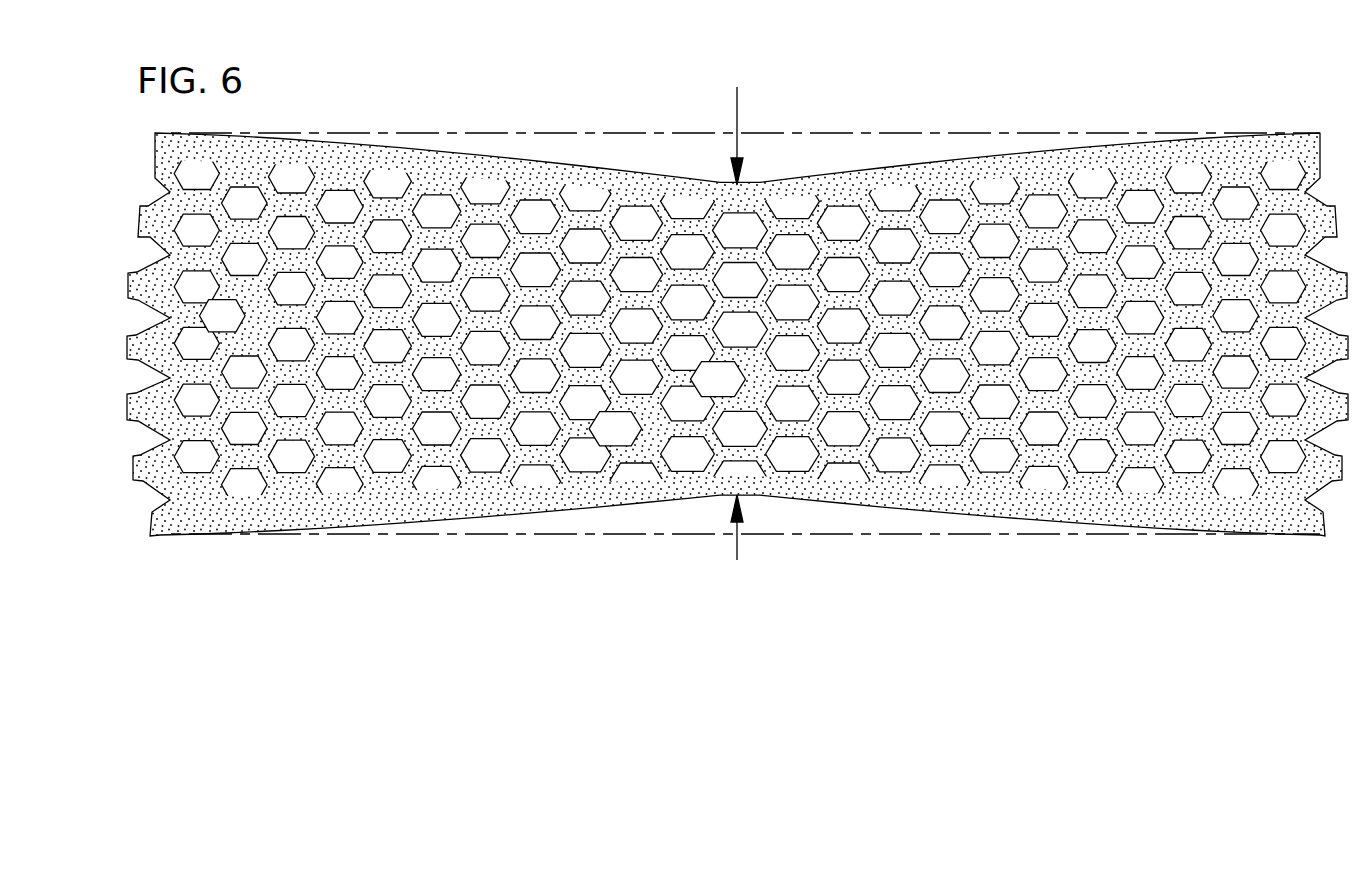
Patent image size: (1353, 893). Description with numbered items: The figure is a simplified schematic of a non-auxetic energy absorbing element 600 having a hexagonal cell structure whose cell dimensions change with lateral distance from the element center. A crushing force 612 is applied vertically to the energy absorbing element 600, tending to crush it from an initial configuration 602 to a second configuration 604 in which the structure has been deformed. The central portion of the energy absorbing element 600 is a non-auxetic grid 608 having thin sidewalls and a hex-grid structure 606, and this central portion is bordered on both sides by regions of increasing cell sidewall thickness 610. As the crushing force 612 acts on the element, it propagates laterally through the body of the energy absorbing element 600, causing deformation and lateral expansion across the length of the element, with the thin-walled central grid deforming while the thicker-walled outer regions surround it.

The non-auxetic energy absorbing element 600 is at (1145, 75).
The initial configuration 602 is at (838, 133).
The second configuration 604 is at (903, 163).
The hex-grid structure 606 is at (633, 427).
The non-auxetic grid 608 is at (738, 372).
The regions of increasing cell sidewall thickness 610 is at (222, 322).
The crushing force 612 is at (735, 108).